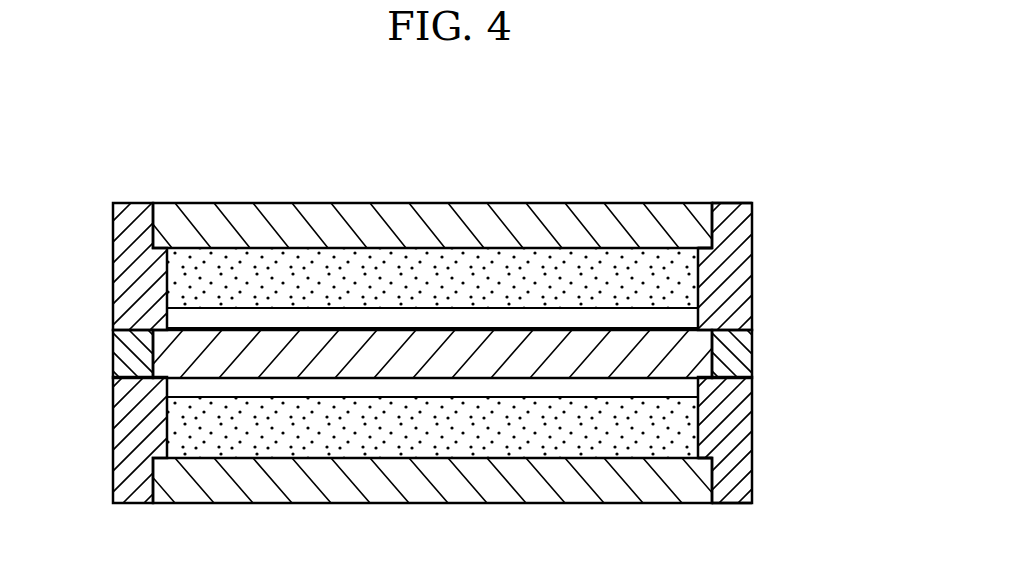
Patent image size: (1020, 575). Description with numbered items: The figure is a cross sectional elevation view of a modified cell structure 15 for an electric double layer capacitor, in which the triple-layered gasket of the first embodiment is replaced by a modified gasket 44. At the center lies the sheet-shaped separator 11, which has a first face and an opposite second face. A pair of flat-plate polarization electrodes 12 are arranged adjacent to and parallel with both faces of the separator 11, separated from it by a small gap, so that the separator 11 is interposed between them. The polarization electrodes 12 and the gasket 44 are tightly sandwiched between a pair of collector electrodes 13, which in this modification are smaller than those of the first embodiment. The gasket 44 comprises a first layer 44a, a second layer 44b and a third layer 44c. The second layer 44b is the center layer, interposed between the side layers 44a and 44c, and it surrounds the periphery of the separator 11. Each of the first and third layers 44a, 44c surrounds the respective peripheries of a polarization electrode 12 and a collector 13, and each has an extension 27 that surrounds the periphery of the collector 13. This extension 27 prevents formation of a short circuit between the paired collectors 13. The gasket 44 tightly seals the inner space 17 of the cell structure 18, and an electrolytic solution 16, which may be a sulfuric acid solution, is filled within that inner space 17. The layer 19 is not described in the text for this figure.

The separator 11 is at (435, 345).
The polarization electrodes 12 is at (295, 270).
The collector electrodes 13 is at (368, 228).
The cell structure 15 is at (812, 176).
The electrolytic solution 16 is at (195, 437).
The inner space 17 is at (193, 285).
The cell structure 18 is at (703, 233).
The current collector sheet 19 is at (752, 322).
The extension 27 is at (752, 213).
The gasket 44 is at (762, 270).
The first layer 44a is at (752, 295).
The second layer 44b is at (752, 352).
The third layer 44c is at (752, 428).